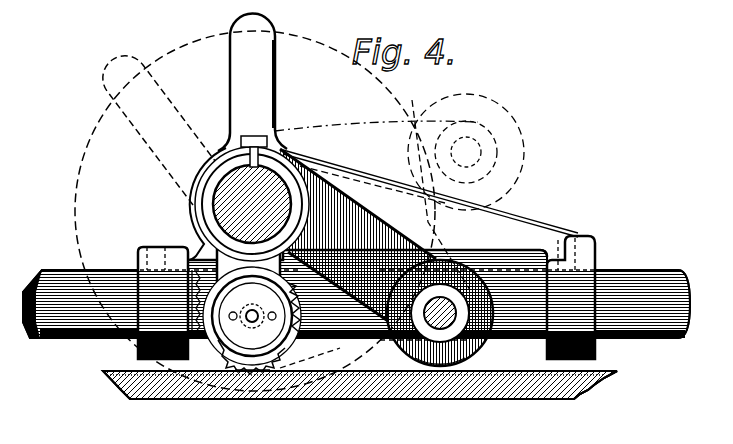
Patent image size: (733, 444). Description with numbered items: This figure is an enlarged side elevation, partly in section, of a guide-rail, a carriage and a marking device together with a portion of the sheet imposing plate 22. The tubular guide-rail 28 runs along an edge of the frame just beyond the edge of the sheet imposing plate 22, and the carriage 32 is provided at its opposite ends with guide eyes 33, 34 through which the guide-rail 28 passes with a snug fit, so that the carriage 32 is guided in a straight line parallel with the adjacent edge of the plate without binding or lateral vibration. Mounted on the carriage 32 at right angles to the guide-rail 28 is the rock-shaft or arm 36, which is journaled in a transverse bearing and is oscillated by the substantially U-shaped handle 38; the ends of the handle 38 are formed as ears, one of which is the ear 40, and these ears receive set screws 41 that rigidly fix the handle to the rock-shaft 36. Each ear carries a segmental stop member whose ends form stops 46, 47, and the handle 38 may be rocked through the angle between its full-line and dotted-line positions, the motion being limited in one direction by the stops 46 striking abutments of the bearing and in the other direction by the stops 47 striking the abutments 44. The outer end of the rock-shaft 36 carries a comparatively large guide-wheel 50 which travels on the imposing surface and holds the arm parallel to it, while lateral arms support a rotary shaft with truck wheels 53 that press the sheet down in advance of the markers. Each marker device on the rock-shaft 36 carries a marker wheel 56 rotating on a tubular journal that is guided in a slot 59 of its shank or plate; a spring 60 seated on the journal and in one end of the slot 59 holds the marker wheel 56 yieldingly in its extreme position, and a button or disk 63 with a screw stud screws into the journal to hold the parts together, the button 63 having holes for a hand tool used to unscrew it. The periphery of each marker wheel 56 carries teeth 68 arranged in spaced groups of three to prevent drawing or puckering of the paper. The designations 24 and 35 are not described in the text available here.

The sheet imposing plate 22 is at (362, 392).
The base rail 24 is at (612, 378).
The guide-rail 28 is at (128, 320).
The carriage 32 is at (413, 192).
The guide eye 33 is at (135, 355).
The guide eye 34 is at (596, 349).
The roller 35 is at (434, 304).
The rock-shaft or arm 36 is at (228, 207).
The handle 38 is at (252, 83).
The ear 40 is at (206, 184).
The set screw 41 is at (358, 230).
The abutment 44 is at (142, 200).
The stop 46 is at (278, 162).
The stop 47 is at (207, 157).
The guide-wheel 50 is at (452, 100).
The truck wheel 53 is at (450, 362).
The marker wheel 56 is at (252, 374).
The slot 59 is at (324, 356).
The spring 60 is at (252, 310).
The button or disk 63 is at (272, 386).
The teeth 68 is at (225, 366).